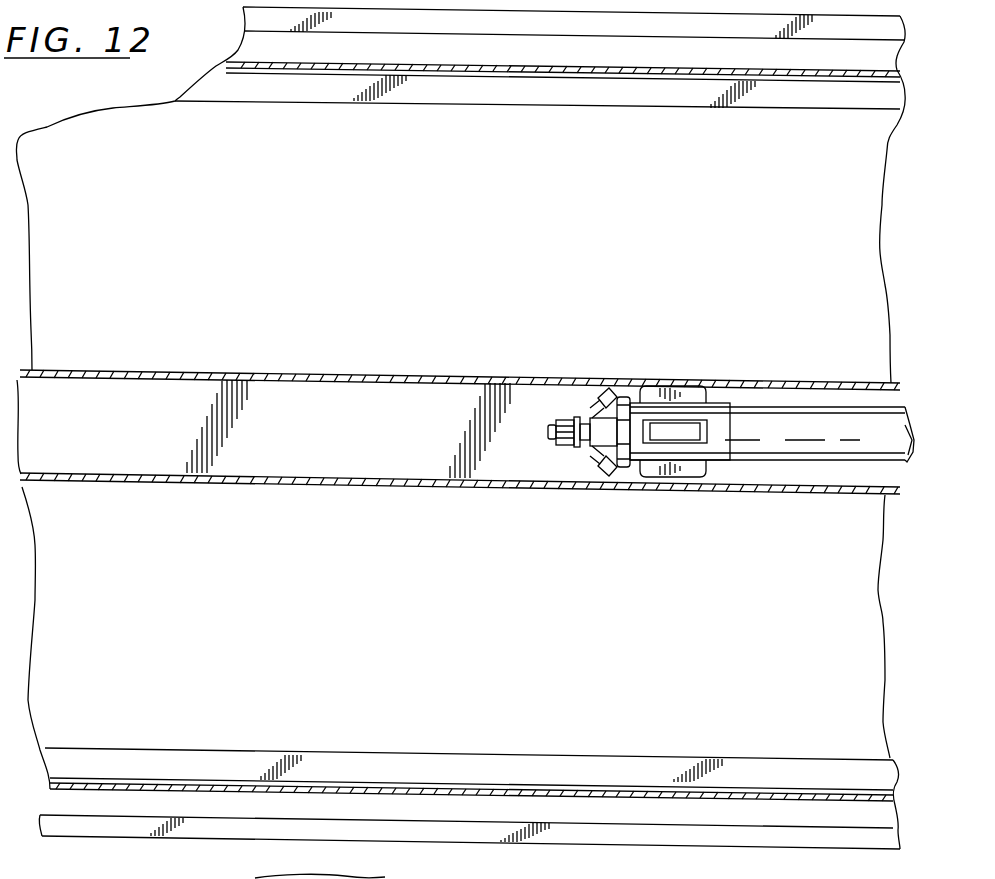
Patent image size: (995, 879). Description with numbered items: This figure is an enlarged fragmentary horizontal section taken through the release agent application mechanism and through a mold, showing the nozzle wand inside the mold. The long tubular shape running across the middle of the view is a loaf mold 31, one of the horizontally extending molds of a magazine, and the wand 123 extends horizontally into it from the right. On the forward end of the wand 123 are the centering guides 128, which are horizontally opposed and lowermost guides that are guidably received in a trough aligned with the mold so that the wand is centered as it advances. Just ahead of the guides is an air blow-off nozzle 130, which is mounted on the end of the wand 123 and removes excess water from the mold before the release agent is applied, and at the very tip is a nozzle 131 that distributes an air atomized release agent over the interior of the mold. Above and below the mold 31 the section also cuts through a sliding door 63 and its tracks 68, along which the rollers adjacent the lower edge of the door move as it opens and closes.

The tracks 68 is at (430, 22).
The door 63 is at (481, 73).
The loaf mold 31 is at (468, 484).
The wand 123 is at (821, 446).
The centering guide 128 is at (683, 471).
The air blow-off nozzle 130 is at (604, 470).
The nozzle 131 is at (552, 441).